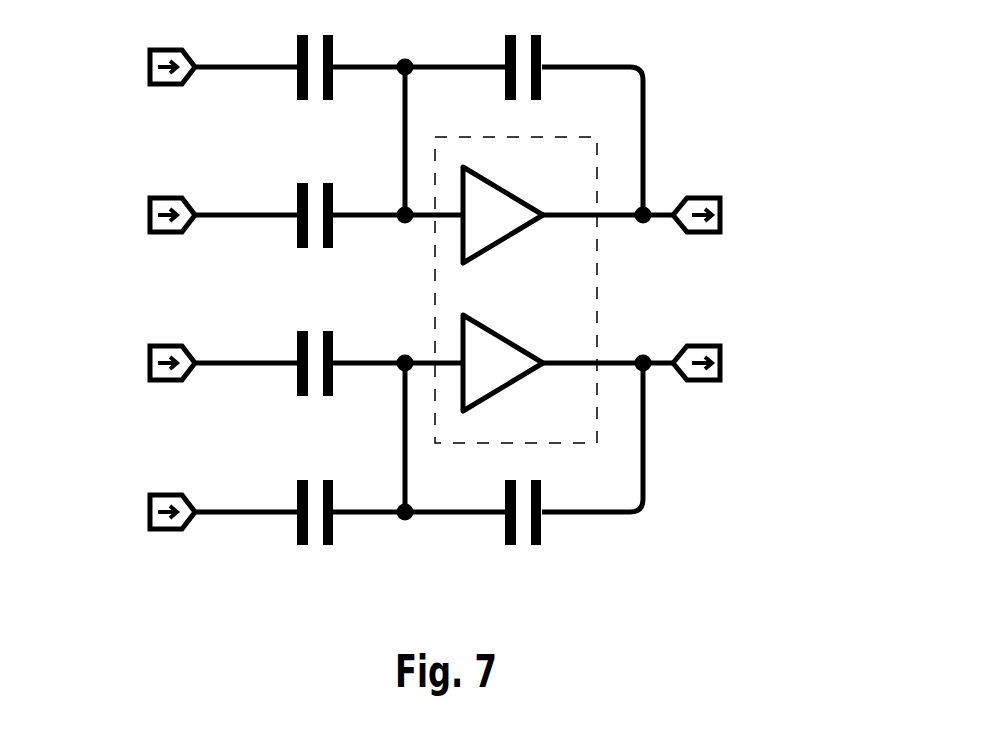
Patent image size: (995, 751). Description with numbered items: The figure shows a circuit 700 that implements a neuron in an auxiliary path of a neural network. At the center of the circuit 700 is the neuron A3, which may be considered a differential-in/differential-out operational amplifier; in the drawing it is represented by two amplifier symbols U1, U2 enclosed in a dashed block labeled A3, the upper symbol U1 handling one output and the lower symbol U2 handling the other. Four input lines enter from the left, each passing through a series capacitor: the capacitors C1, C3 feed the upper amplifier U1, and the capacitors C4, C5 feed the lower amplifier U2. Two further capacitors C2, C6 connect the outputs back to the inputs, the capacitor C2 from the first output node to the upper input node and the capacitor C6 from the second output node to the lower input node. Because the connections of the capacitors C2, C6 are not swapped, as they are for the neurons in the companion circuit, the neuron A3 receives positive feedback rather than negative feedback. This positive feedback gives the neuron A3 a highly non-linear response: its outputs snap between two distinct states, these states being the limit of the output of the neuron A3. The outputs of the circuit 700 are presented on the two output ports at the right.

The circuit 700 is at (450, 279).
The capacitor C1 is at (287, 56).
The capacitor C2 is at (496, 56).
The capacitor C3 is at (287, 204).
The capacitor C4 is at (287, 352).
The capacitor C5 is at (287, 501).
The capacitor C6 is at (496, 501).
The neuron A3 is at (516, 290).
The amplifier U1 is at (506, 204).
The amplifier U2 is at (506, 376).